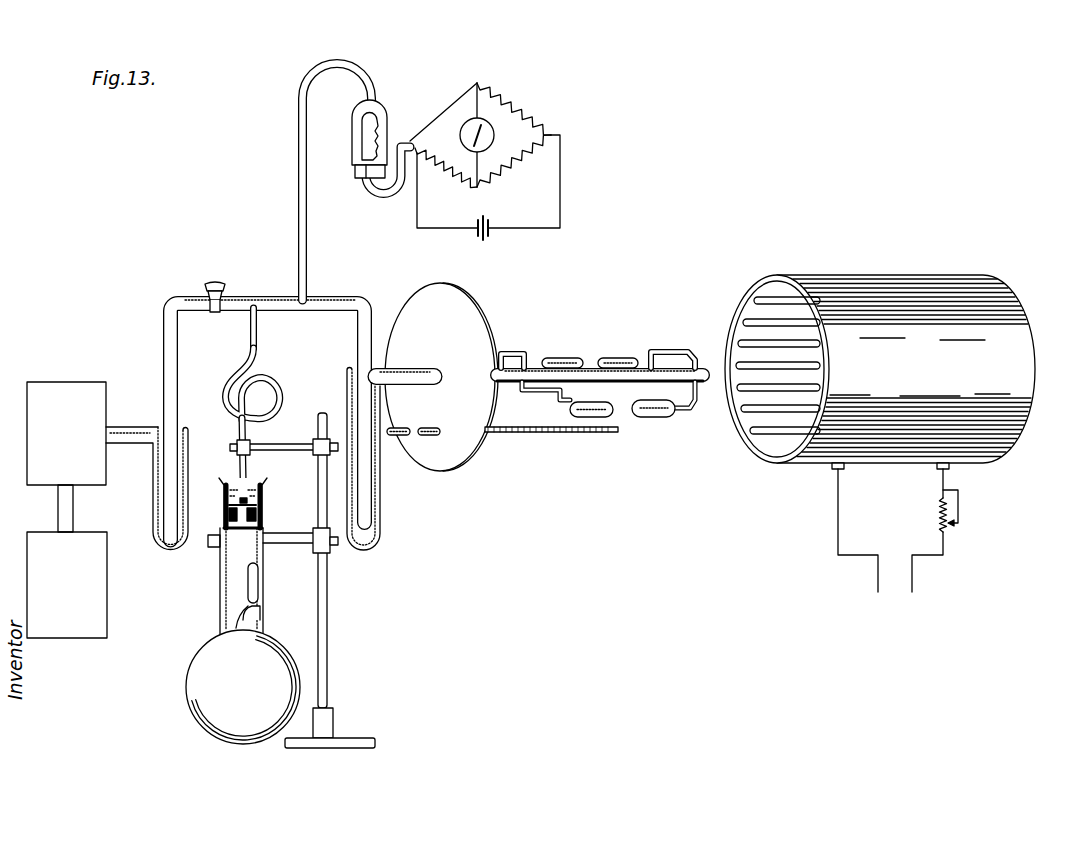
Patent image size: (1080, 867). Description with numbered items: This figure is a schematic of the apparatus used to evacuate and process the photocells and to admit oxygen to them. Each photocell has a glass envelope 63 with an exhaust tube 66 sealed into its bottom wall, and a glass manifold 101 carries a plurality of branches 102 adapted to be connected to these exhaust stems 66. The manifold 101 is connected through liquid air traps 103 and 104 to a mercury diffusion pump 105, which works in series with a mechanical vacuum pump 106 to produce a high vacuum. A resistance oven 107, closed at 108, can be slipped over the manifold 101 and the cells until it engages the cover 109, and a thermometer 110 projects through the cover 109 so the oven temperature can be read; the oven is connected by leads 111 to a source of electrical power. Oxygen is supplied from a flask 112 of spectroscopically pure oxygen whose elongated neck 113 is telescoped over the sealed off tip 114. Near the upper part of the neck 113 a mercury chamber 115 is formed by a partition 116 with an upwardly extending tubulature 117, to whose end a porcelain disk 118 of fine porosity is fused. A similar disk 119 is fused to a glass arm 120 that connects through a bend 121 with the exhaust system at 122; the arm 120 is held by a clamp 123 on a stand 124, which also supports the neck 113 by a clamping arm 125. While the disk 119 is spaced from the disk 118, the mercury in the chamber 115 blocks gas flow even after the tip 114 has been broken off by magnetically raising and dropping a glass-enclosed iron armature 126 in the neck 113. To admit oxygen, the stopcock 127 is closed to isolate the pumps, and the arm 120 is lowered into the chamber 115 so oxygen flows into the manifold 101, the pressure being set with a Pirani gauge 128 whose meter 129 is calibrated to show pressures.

The envelope 63 is at (622, 358).
The exhaust tube 66 is at (548, 358).
The glass manifold 101 is at (604, 368).
The branches 102 is at (503, 350).
The liquid air trap 103 is at (380, 510).
The liquid air trap 104 is at (160, 562).
The mercury diffusion pump 105 is at (95, 382).
The mechanical vacuum pump 106 is at (107, 627).
The resistance oven 107 is at (928, 290).
The closed end of oven 108 is at (1012, 300).
The cover 109 is at (467, 322).
The thermometer 110 is at (490, 436).
The leads 111 is at (878, 573).
The flask 112 is at (205, 698).
The elongated neck 113 is at (221, 585).
The sealed off tip 114 is at (262, 614).
The mercury chamber 115 is at (258, 492).
The partition 116 is at (258, 516).
The tubulature 117 is at (258, 505).
The porcelain disk 118 is at (229, 513).
The porcelain disk 119 is at (224, 492).
The glass arm 120 is at (248, 462).
The bend 121 is at (279, 380).
The connection to exhaust system 122 is at (262, 318).
The clamp 123 is at (275, 447).
The stand 124 is at (328, 580).
The clamping arm 125 is at (297, 545).
The iron armature 126 is at (258, 586).
The stopcock 127 is at (223, 288).
The Pirani gauge 128 is at (358, 183).
The meter 129 is at (463, 124).